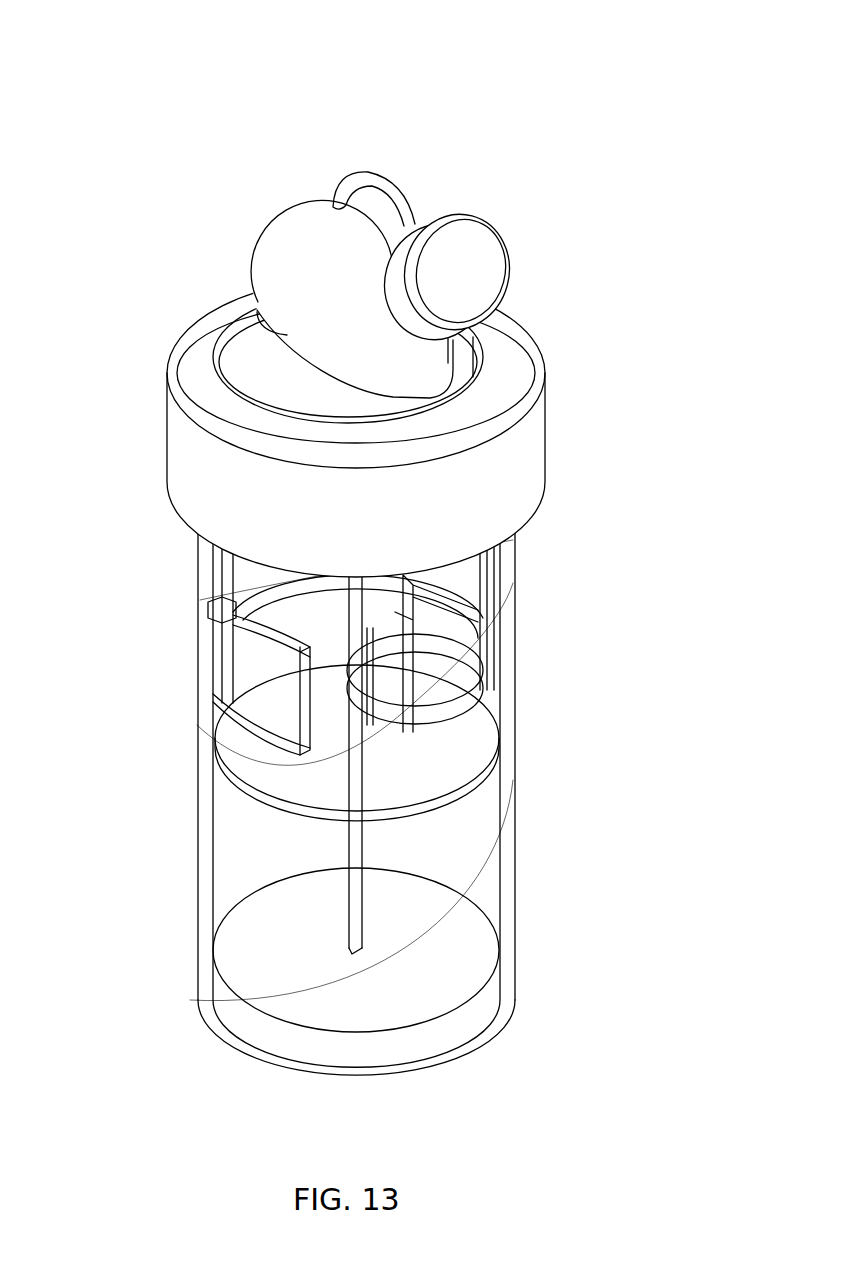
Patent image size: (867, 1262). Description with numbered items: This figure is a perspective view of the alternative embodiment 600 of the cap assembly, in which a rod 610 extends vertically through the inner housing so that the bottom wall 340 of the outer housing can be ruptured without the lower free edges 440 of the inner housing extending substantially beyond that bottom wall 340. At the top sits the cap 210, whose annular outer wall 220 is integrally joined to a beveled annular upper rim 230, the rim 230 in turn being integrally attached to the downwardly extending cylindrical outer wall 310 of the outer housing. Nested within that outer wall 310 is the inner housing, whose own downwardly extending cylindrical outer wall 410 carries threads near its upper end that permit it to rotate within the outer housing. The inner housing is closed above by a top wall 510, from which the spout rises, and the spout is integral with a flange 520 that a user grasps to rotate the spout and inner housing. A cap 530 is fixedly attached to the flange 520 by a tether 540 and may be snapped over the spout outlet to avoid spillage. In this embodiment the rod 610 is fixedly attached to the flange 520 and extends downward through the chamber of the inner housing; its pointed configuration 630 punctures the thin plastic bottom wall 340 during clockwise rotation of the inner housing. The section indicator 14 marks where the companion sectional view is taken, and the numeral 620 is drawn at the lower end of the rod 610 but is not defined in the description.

The section line for FIG. 14 is at (583, 427).
The alternative embodiment 600 is at (380, 87).
The cap 210 is at (548, 352).
The annular outer wall 220 is at (511, 460).
The beveled annular upper rim 230 is at (197, 340).
The outer wall of outer housing 310 is at (507, 783).
The bottom wall 340 is at (447, 1047).
The outer wall of inner housing 410 is at (492, 700).
The open end of inner housing bore 440 is at (257, 805).
The top wall 510 is at (237, 362).
The flange 520 is at (283, 233).
The cap 530 is at (485, 283).
The tether 540 is at (343, 185).
The rod 610 is at (357, 857).
The rod tip 620 is at (366, 950).
The pointed configuration 630 is at (257, 950).